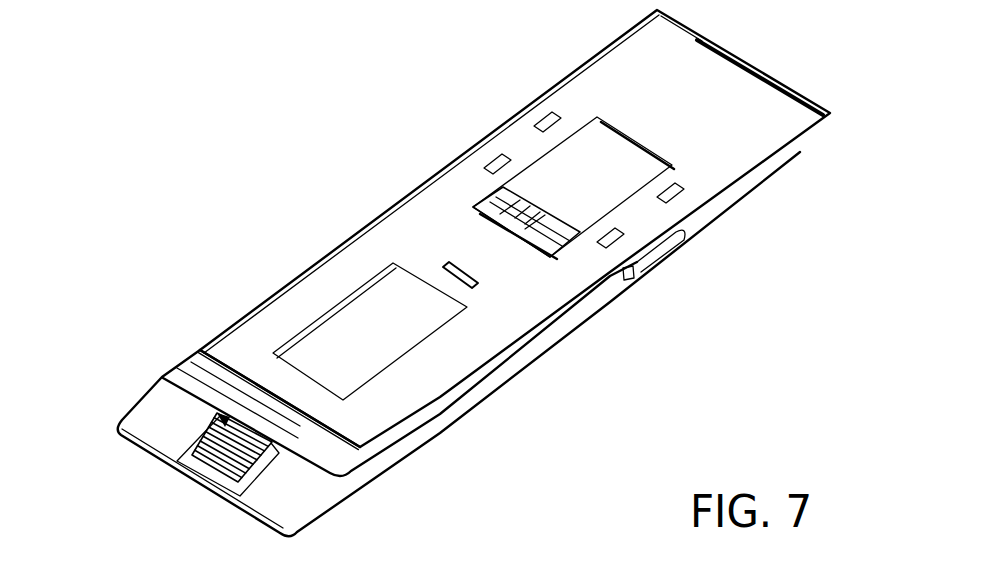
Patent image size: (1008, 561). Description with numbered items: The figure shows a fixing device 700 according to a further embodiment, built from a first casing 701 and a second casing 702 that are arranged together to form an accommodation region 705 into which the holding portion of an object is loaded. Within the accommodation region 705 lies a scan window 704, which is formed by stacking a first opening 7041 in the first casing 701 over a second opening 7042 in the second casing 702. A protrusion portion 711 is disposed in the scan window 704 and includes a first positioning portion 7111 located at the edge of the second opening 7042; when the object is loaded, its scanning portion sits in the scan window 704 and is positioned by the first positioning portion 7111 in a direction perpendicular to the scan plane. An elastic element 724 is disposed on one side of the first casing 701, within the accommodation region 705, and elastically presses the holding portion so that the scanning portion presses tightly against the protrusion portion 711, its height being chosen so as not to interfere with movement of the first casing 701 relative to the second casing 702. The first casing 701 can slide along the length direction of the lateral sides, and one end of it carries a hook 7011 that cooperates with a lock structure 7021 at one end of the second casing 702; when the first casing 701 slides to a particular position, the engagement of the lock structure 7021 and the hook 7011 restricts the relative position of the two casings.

The fixing device 700 is at (106, 30).
The first casing 701 is at (735, 188).
The hook 7011 is at (737, 56).
The lock structure 7021 is at (446, 176).
The second casing 702 is at (537, 347).
The scan window 704 is at (473, 298).
The first opening 7041 is at (610, 190).
The second opening 7042 is at (370, 298).
The accommodation region 705 is at (304, 290).
The protrusion portion 711 is at (372, 384).
The first positioning portion 7111 is at (358, 290).
The elastic element 724 is at (536, 118).